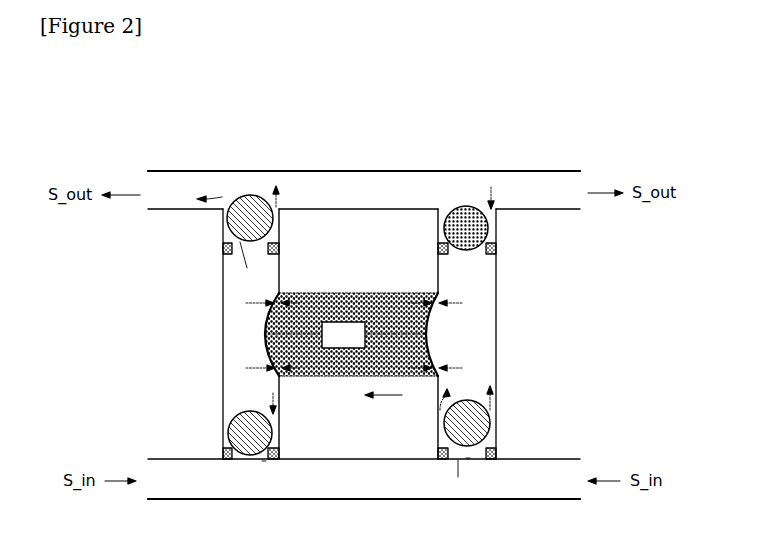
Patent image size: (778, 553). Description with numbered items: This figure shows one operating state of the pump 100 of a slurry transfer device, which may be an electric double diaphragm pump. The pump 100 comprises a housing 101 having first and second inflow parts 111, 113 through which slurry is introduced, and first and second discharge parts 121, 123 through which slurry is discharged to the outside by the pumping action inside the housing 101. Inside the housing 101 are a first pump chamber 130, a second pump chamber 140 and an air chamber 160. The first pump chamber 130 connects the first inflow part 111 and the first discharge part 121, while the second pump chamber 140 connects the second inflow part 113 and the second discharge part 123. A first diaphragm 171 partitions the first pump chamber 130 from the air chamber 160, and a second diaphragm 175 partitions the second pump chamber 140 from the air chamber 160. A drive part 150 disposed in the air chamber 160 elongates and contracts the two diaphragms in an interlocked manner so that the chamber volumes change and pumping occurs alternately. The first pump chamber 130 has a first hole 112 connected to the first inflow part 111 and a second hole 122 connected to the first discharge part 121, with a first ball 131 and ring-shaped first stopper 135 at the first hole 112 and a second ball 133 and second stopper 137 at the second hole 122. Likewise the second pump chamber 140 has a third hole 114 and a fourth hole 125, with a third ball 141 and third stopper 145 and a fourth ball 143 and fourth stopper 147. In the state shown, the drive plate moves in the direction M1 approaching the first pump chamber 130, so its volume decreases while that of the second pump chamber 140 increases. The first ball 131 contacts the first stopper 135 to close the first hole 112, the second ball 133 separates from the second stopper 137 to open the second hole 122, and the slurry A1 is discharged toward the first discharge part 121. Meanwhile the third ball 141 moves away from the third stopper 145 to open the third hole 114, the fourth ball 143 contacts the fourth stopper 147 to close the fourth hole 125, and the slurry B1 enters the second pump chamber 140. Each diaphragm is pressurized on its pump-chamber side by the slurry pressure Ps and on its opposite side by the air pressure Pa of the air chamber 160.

The pump 100 is at (108, 97).
The housing 101 is at (207, 352).
The first inflow part 111 is at (163, 501).
The first hole 112 is at (264, 462).
The second inflow part 113 is at (556, 502).
The third hole 114 is at (469, 459).
The first discharge part 121 is at (181, 170).
The second hole 122 is at (240, 255).
The second discharge part 123 is at (537, 170).
The fourth hole 125 is at (481, 252).
The first pump chamber 130 is at (237, 383).
The first ball 131 is at (228, 427).
The second ball 133 is at (253, 196).
The first stopper 135 is at (227, 462).
The second stopper 137 is at (222, 249).
The second pump chamber 140 is at (475, 278).
The third ball 141 is at (491, 416).
The fourth ball 143 is at (494, 218).
The third stopper 145 is at (497, 455).
The fourth stopper 147 is at (497, 246).
The drive part 150 is at (342, 356).
The air chamber 160 is at (381, 302).
The first diaphragm 171 is at (266, 326).
The second diaphragm 175 is at (430, 343).
The slurry A1 is at (222, 196).
The slurry B1 is at (456, 470).
The direction M1 is at (384, 404).
The slurry pressure Ps is at (336, 335).
The air pressure Pa is at (371, 335).